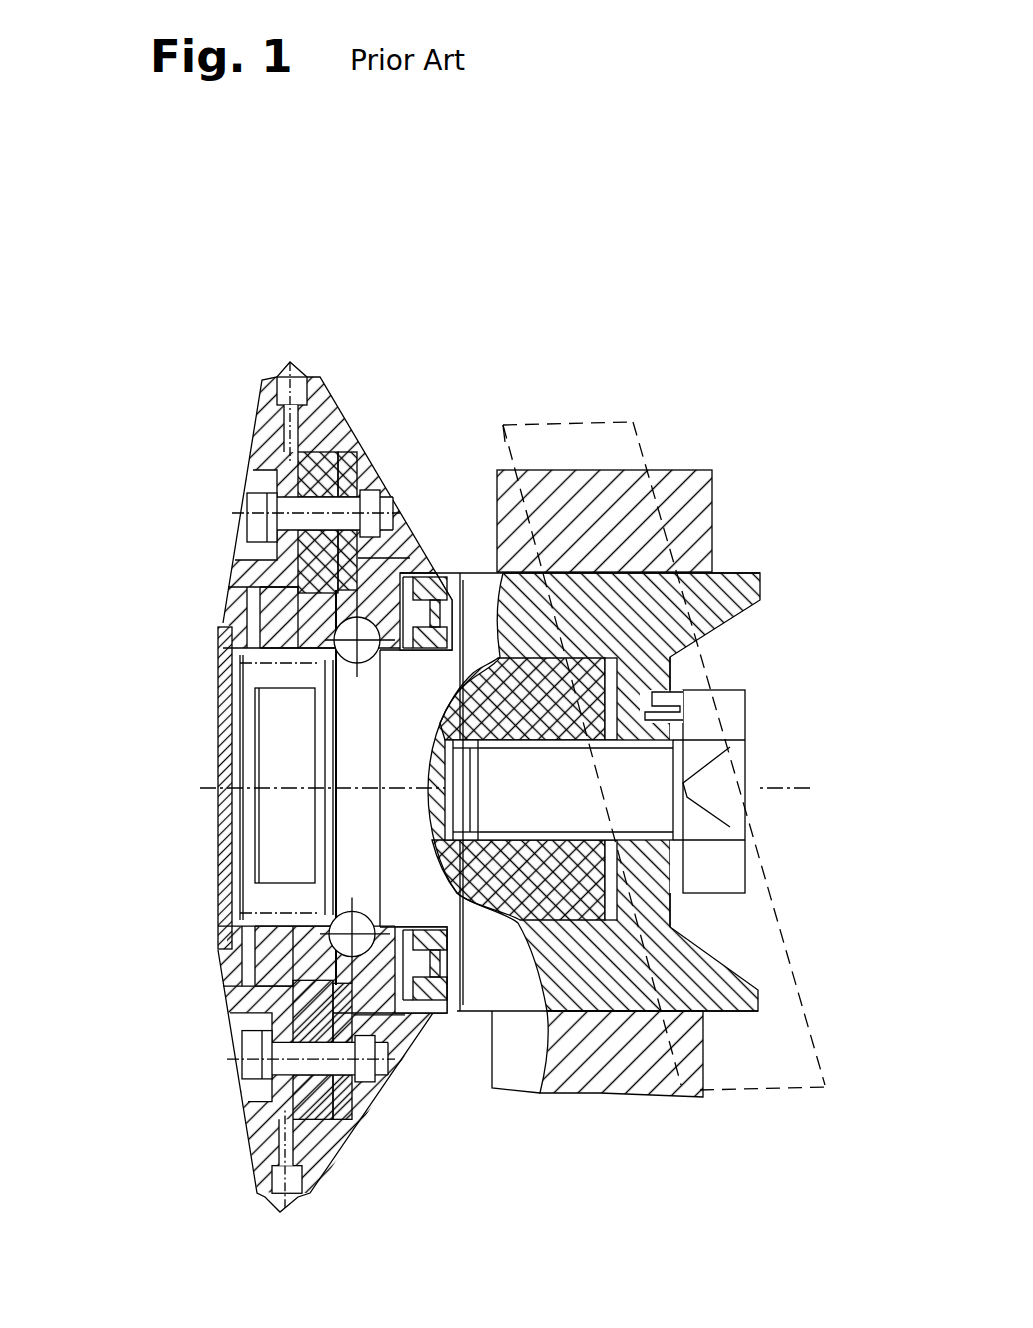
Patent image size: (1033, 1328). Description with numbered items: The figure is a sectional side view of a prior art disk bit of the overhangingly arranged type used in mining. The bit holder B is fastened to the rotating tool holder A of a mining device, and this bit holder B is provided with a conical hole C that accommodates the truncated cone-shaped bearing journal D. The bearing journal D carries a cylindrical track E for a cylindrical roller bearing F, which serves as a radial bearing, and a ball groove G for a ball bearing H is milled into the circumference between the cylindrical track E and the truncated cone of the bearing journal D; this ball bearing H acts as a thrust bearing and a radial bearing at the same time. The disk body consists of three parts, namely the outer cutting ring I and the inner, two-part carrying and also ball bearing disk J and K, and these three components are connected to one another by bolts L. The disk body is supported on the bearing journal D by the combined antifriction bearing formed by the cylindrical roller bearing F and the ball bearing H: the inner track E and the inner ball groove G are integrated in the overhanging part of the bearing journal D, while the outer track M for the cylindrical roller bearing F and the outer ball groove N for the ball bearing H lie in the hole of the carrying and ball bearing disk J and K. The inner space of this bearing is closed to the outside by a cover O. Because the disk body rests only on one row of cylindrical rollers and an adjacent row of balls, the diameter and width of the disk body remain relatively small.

The rotating tool holder A is at (530, 1060).
The bit holder B is at (483, 985).
The conical hole C is at (475, 650).
The bearing journal D is at (420, 700).
The cylindrical track E is at (285, 880).
The cylindrical roller bearing F is at (287, 655).
The ball groove G is at (360, 850).
The ball bearing H is at (295, 572).
The outer cutting ring I is at (320, 380).
The carrying and ball bearing disk J is at (348, 440).
The carrying and ball bearing disk K is at (363, 447).
The bolts L is at (293, 510).
The outer track M is at (300, 913).
The outer ball groove N is at (335, 625).
The cover O is at (215, 705).